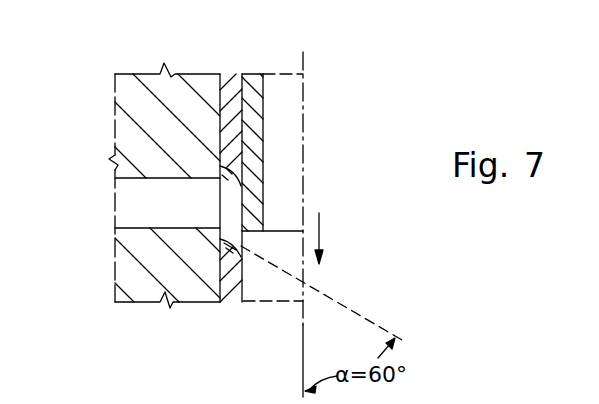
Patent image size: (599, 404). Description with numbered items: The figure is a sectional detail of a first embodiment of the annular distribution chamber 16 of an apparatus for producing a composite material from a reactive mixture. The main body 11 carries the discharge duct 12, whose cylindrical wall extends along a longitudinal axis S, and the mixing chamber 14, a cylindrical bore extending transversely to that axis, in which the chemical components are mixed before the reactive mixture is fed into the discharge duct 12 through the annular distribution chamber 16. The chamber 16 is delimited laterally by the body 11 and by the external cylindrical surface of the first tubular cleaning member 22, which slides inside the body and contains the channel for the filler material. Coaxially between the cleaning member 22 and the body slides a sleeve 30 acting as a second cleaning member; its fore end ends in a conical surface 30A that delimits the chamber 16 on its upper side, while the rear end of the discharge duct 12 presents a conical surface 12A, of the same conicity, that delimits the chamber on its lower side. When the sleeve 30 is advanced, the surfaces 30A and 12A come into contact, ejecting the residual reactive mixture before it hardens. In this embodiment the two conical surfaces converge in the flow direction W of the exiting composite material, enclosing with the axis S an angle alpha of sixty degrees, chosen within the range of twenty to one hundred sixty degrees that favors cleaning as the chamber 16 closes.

The main body 11 is at (143, 105).
The mixing chamber 14 is at (133, 203).
The sleeve 30 is at (232, 90).
The conical surface 30A is at (231, 168).
The conical surface 12A is at (222, 238).
The discharge duct 12 is at (275, 285).
The annular distribution chamber 16 is at (230, 210).
The cleaning member 22 is at (250, 108).
The longitudinal axis S is at (303, 174).
The flow direction W is at (332, 238).